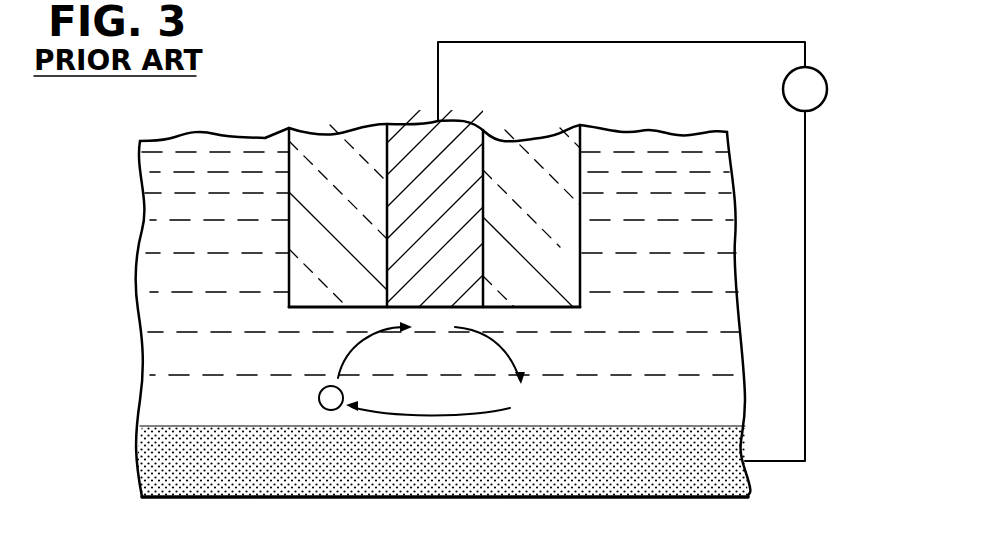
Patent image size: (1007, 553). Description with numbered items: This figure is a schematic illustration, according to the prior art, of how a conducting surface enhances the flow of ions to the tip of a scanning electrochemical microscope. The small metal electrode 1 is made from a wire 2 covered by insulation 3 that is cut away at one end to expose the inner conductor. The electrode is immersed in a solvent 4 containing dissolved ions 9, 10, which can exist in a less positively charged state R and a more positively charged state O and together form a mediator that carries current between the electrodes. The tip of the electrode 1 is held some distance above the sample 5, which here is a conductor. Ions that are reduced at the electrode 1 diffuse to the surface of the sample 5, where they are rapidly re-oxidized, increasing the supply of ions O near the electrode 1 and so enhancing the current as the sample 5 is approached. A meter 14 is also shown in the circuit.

The metal electrode 1 is at (438, 308).
The wire 2 is at (427, 147).
The insulation 3 is at (528, 162).
The solvent 4 is at (120, 337).
The sample 5 is at (446, 478).
The dissolved ion 9 is at (318, 398).
The dissolved ion 10 is at (533, 393).
The voltmeter 14 is at (827, 89).